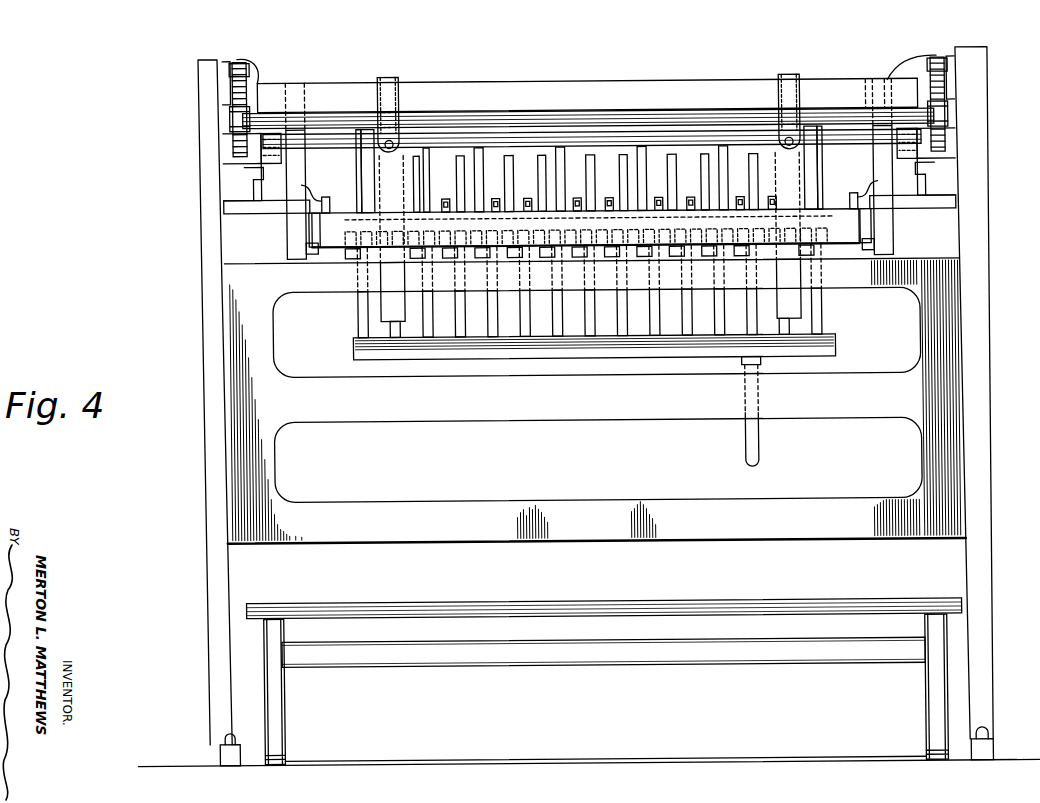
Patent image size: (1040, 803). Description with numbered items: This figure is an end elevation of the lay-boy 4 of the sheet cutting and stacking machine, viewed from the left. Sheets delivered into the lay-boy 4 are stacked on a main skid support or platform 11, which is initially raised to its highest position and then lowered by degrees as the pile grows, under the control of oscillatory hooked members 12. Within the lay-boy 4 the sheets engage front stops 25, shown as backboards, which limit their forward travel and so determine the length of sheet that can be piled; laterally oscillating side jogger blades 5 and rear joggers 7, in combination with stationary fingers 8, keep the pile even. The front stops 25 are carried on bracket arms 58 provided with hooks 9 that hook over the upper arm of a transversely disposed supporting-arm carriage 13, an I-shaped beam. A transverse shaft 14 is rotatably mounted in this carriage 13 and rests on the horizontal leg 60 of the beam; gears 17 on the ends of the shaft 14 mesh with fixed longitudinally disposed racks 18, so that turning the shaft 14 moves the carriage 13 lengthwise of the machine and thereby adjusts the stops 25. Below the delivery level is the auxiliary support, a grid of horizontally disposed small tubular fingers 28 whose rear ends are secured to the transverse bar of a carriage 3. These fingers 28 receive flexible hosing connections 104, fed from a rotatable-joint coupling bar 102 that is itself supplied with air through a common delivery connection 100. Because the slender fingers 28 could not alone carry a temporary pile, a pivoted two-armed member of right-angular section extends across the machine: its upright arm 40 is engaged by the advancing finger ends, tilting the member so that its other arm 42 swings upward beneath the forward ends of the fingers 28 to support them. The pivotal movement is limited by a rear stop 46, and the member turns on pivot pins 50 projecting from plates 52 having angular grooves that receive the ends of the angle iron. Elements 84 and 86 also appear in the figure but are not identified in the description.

The carriage 3 is at (565, 252).
The lay-boy 4 is at (293, 348).
The side jogger blades 5 is at (357, 136).
The rear joggers 7 is at (476, 197).
The stationary fingers 8 is at (718, 182).
The hooks 9 is at (388, 84).
The main skid support or platform 11 is at (500, 614).
The oscillatory hooked members 12 is at (572, 199).
The supporting-arm carriage 13 is at (585, 96).
The shaft 14 is at (485, 119).
The gears 17 is at (222, 131).
The racks 18 is at (240, 68).
The front stops 25 is at (405, 150).
The fingers 28 is at (528, 251).
The upper arm 40 is at (677, 220).
The horizontally disposed arm 42 is at (617, 247).
The rear stop 46 is at (307, 231).
The pivot pins 50 is at (303, 261).
The plates 52 is at (317, 252).
The bracket arms 58 is at (292, 228).
The horizontal leg 60 is at (262, 134).
The latch 84 is at (327, 213).
The spring hook 86 is at (308, 199).
The common delivery connection 100 is at (756, 446).
The rotatable-joint coupling bar 102 is at (831, 362).
The flexible hosing connections 104 is at (353, 331).